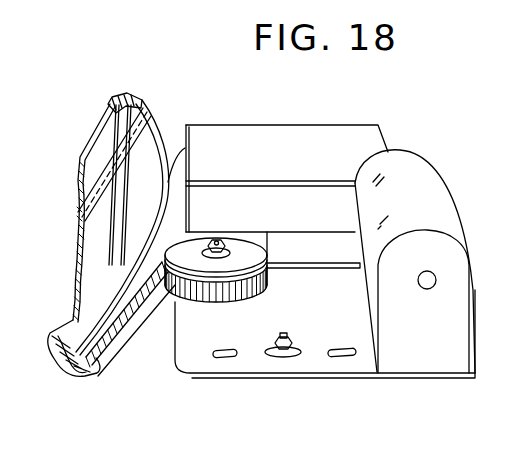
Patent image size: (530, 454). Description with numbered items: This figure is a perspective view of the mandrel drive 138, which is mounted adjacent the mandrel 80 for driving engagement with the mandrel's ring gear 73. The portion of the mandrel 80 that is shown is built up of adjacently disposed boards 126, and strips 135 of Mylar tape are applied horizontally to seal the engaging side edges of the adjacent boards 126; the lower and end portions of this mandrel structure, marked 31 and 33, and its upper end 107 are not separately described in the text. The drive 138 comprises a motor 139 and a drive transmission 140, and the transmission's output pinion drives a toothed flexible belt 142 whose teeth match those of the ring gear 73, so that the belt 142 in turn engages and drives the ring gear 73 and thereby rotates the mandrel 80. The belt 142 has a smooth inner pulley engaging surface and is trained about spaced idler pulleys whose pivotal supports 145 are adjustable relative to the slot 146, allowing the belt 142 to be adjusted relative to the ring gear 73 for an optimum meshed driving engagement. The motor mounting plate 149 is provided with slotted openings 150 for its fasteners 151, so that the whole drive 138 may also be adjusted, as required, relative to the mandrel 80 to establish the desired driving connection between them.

The arm lower portion 31 is at (68, 326).
The arm end foot 33 is at (78, 375).
The ring gear 73 is at (112, 343).
The mandrel 80 is at (190, 118).
The arm upper end 107 is at (110, 104).
The boards 126 is at (98, 214).
The strips of Mylar tape 135 is at (82, 194).
The mandrel drive 138 is at (343, 256).
The motor 139 is at (442, 192).
The drive transmission 140 is at (362, 111).
The toothed flexible belt 142 is at (262, 288).
The pivotal supports 145 is at (219, 238).
The slot 146 is at (267, 257).
The motor mounting plate 149 is at (366, 370).
The slotted openings 150 is at (328, 353).
The fasteners 151 is at (285, 339).